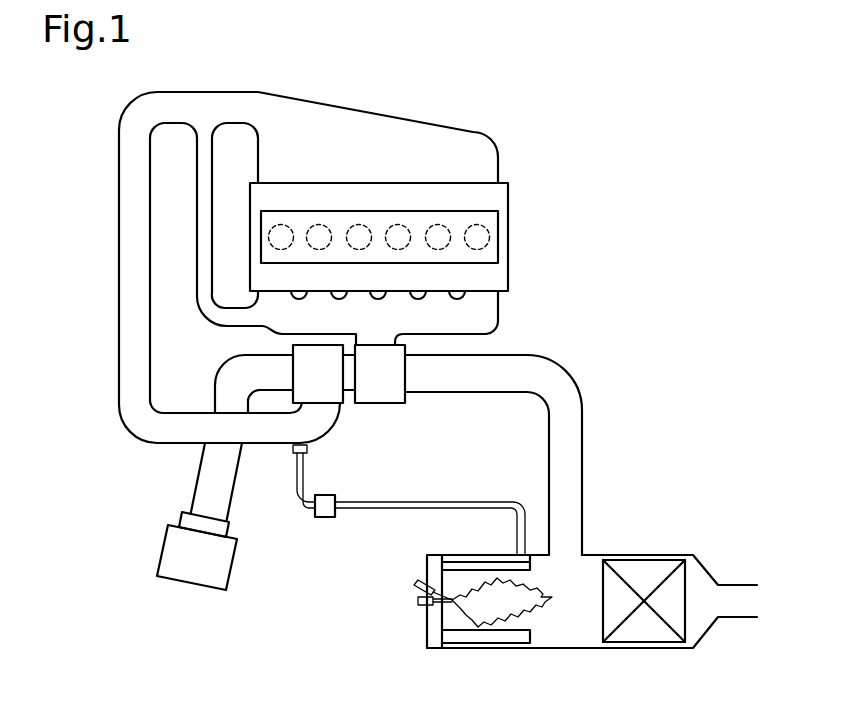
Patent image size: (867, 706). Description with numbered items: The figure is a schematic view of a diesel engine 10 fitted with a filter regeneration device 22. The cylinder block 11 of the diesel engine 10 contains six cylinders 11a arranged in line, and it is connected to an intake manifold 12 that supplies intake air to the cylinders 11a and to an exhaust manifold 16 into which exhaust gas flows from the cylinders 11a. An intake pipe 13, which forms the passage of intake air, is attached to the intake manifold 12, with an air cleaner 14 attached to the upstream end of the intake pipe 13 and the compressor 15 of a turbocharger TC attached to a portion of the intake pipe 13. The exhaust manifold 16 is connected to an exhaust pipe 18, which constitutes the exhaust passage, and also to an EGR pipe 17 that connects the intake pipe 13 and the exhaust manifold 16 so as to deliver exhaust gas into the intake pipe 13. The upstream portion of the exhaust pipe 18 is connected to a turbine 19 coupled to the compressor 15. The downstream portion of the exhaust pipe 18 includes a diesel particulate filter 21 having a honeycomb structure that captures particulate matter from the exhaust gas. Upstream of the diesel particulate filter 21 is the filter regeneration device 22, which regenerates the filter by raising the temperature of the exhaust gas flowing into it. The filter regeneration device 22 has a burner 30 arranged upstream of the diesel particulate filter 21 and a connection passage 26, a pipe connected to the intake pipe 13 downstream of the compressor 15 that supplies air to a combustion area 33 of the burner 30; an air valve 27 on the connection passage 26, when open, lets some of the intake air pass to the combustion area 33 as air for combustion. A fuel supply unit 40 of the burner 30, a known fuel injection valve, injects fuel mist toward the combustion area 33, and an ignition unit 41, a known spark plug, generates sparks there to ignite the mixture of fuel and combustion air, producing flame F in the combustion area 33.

The diesel engine 10 is at (639, 182).
The cylinder block 11 is at (498, 181).
The cylinders 11a is at (357, 224).
The intake manifold 12 is at (414, 120).
The intake pipe 13 is at (200, 460).
The air cleaner 14 is at (160, 546).
The compressor 15 is at (293, 348).
The exhaust manifold 16 is at (498, 304).
The EGR pipe 17 is at (215, 137).
The exhaust pipe 18 is at (557, 358).
The turbine 19 is at (361, 341).
The diesel particulate filter 21 is at (645, 559).
The filter regeneration device 22 is at (506, 665).
The connection passage 26 is at (338, 495).
The air valve 27 is at (322, 518).
The burner 30 is at (414, 635).
The combustion area 33 is at (463, 628).
The fuel supply unit 40 is at (418, 601).
The ignition unit 41 is at (416, 584).
The turbocharger TC is at (368, 425).
The flame F is at (540, 590).